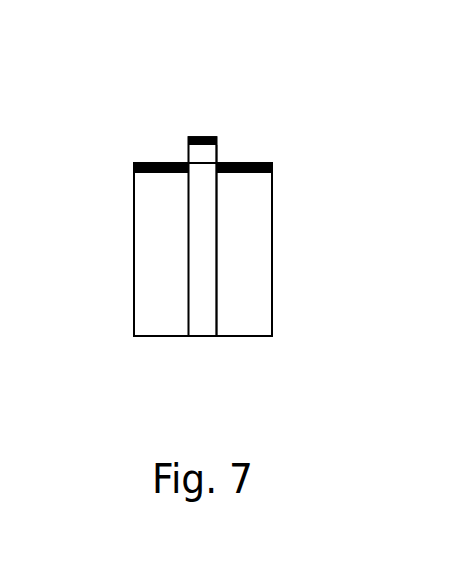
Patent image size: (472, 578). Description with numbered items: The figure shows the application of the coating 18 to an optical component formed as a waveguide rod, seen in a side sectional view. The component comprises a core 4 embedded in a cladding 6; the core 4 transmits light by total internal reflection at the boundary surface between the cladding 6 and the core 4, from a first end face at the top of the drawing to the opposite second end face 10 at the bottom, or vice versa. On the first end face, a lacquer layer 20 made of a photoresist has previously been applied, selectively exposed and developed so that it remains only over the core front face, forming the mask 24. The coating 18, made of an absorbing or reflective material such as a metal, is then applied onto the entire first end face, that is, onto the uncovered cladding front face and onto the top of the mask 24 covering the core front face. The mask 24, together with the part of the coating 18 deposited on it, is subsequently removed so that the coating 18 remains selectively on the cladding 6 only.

The core 4 is at (217, 296).
The cladding 6 is at (272, 210).
The second end face 10 is at (248, 352).
The coating 18 is at (153, 162).
The lacquer layer 20 is at (202, 157).
The mask 24 is at (203, 236).